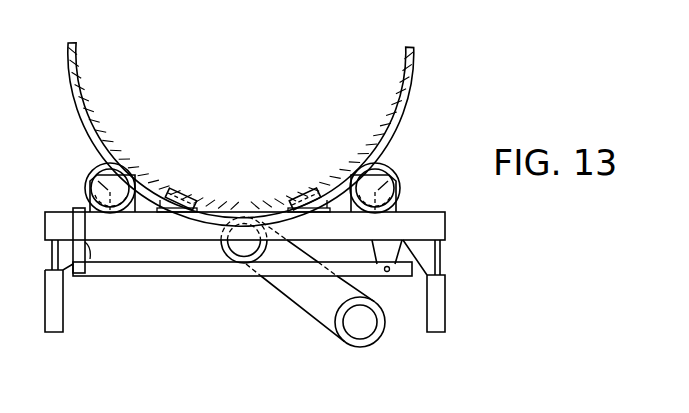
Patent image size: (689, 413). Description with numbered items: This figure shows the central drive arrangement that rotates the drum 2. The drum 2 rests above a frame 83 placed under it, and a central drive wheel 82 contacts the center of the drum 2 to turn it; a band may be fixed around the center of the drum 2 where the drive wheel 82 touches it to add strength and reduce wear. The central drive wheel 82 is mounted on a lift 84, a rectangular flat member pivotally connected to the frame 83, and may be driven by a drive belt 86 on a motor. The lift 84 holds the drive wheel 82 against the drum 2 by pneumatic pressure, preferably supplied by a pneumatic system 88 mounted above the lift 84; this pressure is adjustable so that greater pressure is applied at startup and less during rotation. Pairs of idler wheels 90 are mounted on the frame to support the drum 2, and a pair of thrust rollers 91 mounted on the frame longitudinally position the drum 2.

The drum 2 is at (413, 47).
The central drive wheel 82 is at (228, 264).
The frame 83 is at (447, 227).
The lift 84 is at (243, 266).
The drive belt 86 is at (316, 339).
The pneumatic system 88 is at (93, 262).
The idler wheels 90 is at (97, 170).
The thrust rollers 91 is at (189, 190).